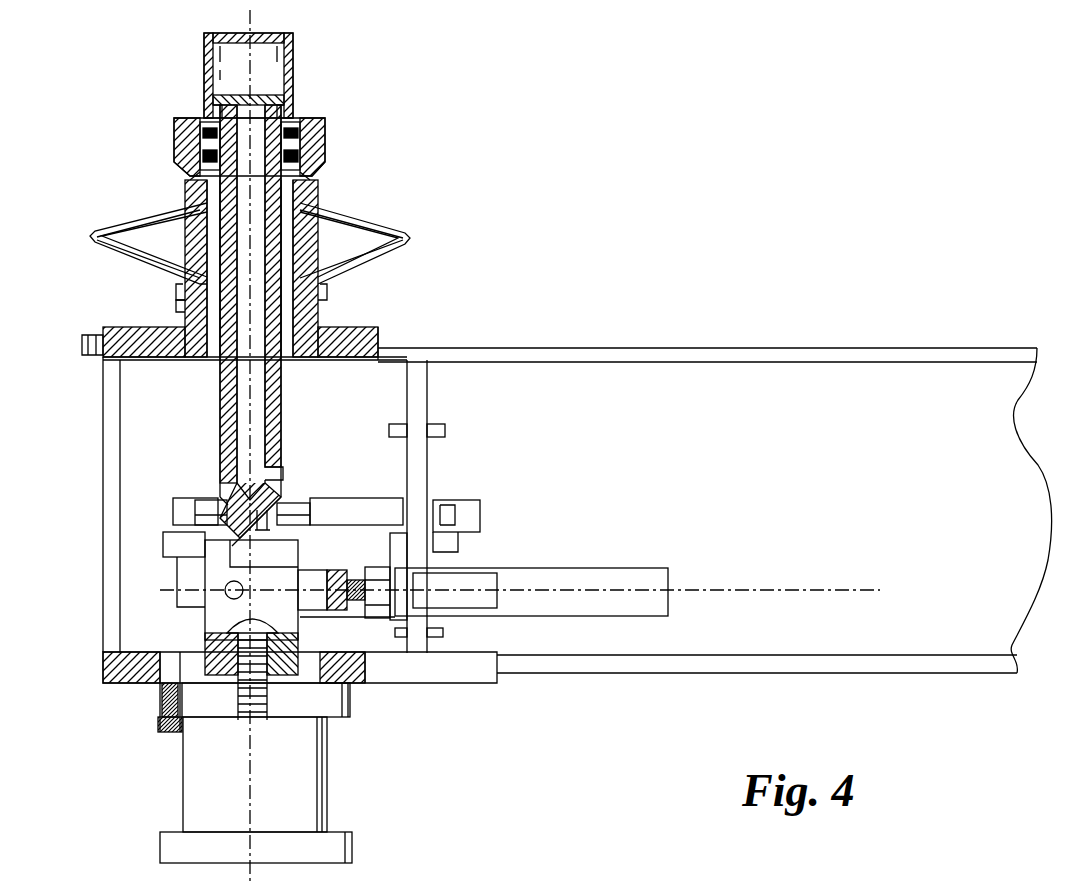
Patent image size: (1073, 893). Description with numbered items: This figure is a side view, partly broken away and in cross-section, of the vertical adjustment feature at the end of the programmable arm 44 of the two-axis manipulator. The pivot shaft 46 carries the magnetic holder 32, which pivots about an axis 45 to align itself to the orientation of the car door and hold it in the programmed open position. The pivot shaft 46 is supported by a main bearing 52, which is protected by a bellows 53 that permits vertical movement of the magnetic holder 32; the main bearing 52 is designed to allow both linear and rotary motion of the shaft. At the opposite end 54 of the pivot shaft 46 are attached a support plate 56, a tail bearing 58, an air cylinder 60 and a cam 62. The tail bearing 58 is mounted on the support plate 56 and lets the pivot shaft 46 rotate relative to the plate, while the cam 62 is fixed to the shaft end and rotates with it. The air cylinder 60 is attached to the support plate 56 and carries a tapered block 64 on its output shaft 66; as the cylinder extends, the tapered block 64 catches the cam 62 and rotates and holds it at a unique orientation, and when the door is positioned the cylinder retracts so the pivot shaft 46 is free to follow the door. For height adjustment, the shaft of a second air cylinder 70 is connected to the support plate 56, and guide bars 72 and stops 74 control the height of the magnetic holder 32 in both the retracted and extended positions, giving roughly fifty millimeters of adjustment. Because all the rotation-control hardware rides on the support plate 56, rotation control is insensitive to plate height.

The magnetic holder 32 is at (275, 53).
The arm 44 is at (575, 347).
The axis 45 is at (250, 738).
The pivot shaft 46 is at (280, 450).
The main bearing 52 is at (318, 212).
The bellows 53 is at (405, 242).
The opposite end 54 is at (240, 521).
The support plate 56 is at (478, 510).
The tail bearing 58 is at (215, 505).
The air cylinder 60 is at (612, 568).
The cam 62 is at (160, 552).
The tapered block 64 is at (348, 610).
The output shaft 66 is at (362, 600).
The second air cylinder 70 is at (352, 840).
The guide bars 72 is at (417, 362).
The stops 74 is at (438, 427).